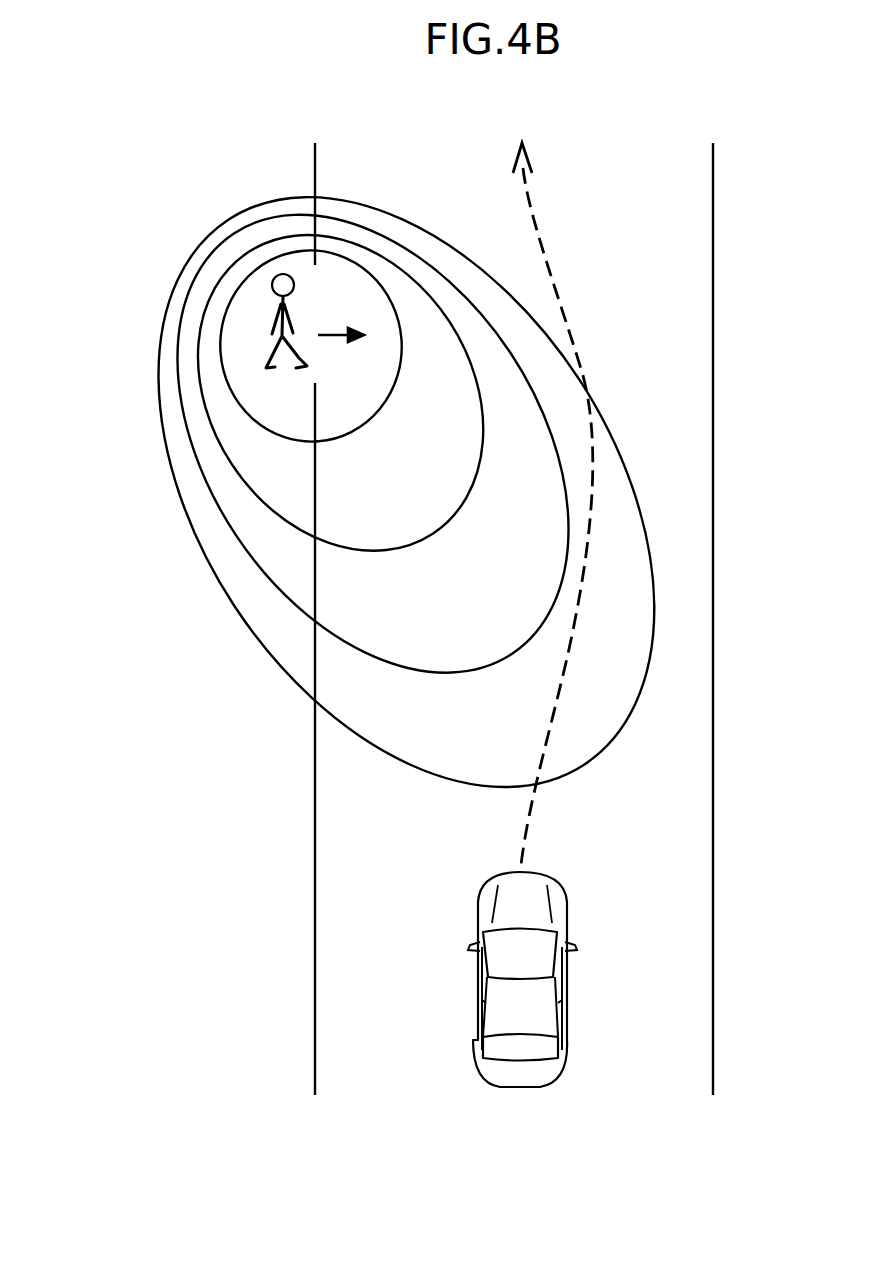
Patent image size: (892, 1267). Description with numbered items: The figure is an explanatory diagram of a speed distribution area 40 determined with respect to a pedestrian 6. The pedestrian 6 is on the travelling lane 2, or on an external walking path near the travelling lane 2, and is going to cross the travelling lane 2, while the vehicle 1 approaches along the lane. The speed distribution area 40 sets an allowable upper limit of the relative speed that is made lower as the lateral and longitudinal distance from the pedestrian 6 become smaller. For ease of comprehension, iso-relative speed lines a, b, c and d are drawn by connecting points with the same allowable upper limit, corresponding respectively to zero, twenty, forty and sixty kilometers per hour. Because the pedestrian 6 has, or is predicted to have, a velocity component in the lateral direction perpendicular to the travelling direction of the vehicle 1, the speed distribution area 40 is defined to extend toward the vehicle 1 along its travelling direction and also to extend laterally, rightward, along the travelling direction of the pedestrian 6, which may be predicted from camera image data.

The vehicle 1 is at (568, 1000).
The travelling lane 2 is at (693, 228).
The pedestrian 6 is at (290, 372).
The speed distribution area 40 is at (406, 492).
The iso-relative speed line a is at (363, 435).
The iso-relative speed line b is at (427, 545).
The iso-relative speed line c is at (437, 673).
The iso-relative speed line d is at (425, 786).